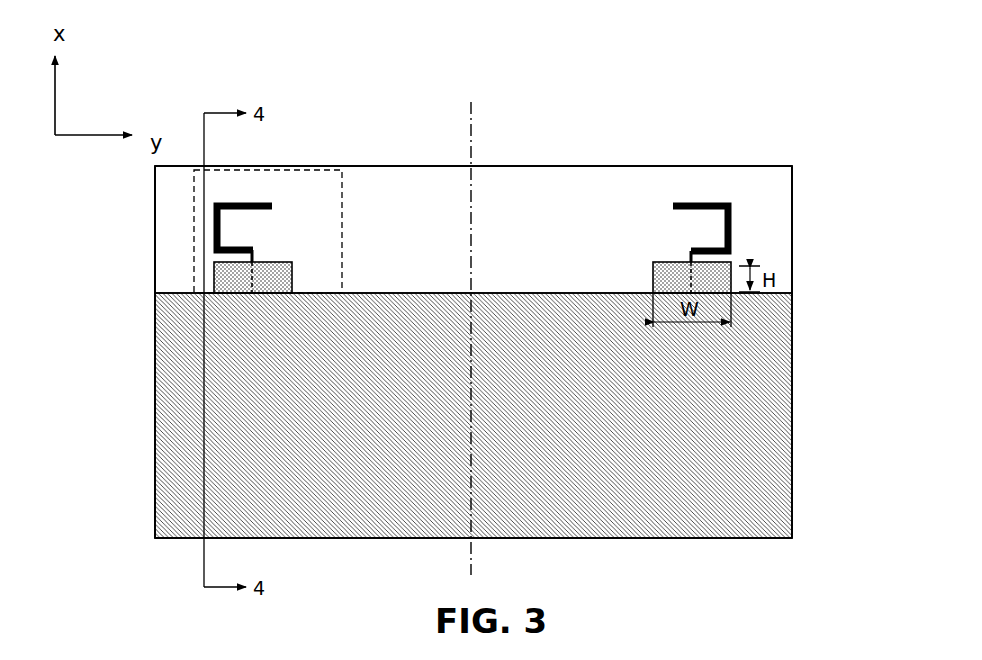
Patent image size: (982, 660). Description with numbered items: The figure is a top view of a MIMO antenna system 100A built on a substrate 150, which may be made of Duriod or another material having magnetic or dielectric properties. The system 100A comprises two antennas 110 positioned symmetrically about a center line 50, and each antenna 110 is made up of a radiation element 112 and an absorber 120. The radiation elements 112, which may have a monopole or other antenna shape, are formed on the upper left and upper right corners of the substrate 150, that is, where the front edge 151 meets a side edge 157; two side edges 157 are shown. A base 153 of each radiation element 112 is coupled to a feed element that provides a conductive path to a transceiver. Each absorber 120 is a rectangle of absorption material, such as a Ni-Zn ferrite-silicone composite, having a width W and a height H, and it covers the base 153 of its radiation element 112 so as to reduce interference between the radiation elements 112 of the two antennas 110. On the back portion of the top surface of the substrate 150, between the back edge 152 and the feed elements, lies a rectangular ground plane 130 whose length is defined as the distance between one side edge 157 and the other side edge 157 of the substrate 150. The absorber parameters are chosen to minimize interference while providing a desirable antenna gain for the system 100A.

The MIMO antenna system 100A is at (417, 62).
The center line 50 is at (473, 138).
The antenna 110 is at (227, 168).
The radiation element 112 is at (233, 203).
The absorber 120 is at (265, 261).
The ground plane 130 is at (780, 350).
The substrate 150 is at (387, 183).
The front edge 151 is at (525, 166).
The back edge 152 is at (557, 538).
The base 153 is at (252, 277).
The side edge 157 is at (155, 423).